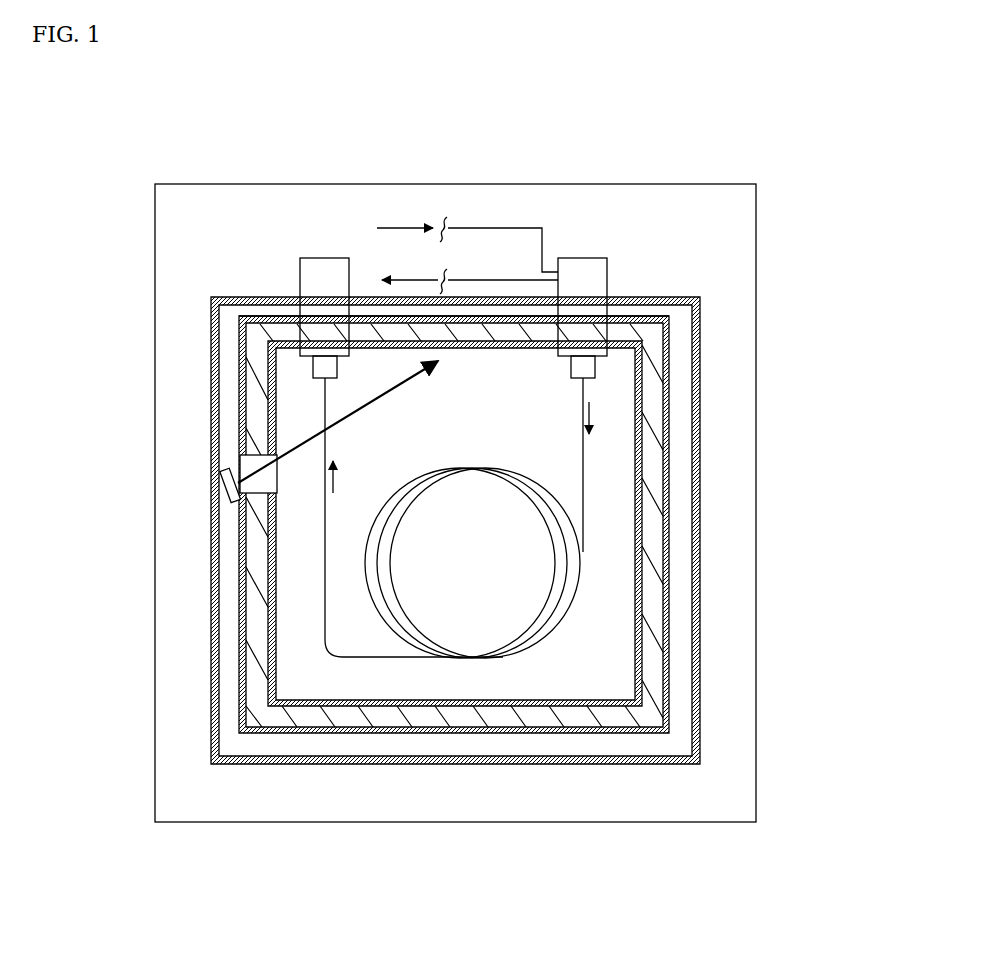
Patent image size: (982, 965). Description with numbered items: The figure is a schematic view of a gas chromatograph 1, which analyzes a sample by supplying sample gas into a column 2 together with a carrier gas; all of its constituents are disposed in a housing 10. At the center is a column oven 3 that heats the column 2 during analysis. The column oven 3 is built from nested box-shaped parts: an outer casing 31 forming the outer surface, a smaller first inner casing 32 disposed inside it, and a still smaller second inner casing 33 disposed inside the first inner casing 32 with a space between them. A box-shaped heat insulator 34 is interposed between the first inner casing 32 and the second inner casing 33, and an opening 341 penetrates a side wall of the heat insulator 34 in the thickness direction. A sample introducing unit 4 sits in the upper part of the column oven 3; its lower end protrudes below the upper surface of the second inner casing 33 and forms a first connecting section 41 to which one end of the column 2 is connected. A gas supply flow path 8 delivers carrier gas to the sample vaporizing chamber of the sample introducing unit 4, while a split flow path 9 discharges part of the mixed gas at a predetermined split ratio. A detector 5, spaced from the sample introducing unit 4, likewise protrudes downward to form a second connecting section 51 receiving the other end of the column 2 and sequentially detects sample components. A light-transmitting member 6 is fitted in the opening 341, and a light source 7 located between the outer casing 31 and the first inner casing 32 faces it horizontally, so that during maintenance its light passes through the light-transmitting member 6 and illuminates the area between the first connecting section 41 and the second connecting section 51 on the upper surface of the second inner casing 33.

The gas chromatograph 1 is at (497, 468).
The housing 10 is at (735, 164).
The column 2 is at (475, 468).
The column oven 3 is at (688, 297).
The outer casing 31 is at (649, 298).
The first inner casing 32 is at (667, 427).
The second inner casing 33 is at (640, 478).
The heat insulator 34 is at (658, 539).
The opening 341 is at (278, 481).
The sample introducing unit 4 is at (585, 258).
The first connecting section 41 is at (571, 362).
The detector 5 is at (322, 257).
The second connecting section 51 is at (338, 365).
The light-transmitting member 6 is at (255, 452).
The light source 7 is at (223, 495).
The gas supply flow path 8 is at (480, 228).
The split flow path 9 is at (487, 280).